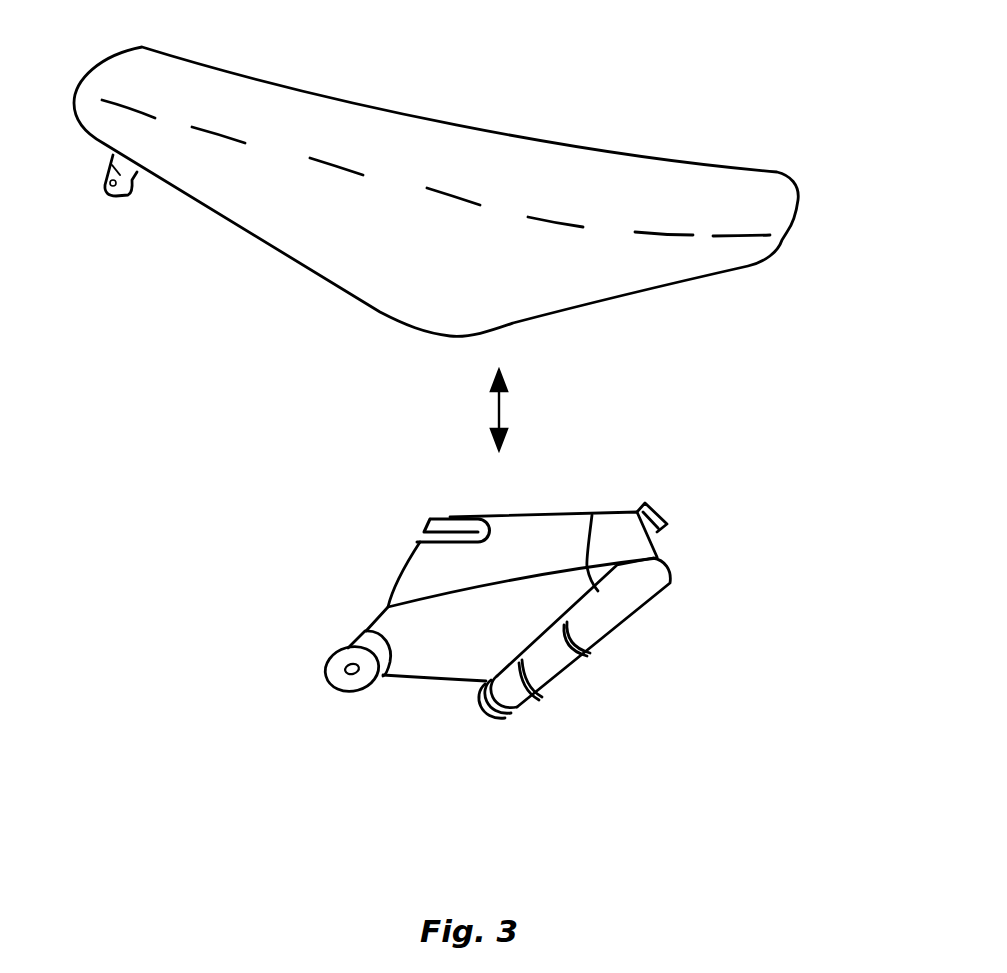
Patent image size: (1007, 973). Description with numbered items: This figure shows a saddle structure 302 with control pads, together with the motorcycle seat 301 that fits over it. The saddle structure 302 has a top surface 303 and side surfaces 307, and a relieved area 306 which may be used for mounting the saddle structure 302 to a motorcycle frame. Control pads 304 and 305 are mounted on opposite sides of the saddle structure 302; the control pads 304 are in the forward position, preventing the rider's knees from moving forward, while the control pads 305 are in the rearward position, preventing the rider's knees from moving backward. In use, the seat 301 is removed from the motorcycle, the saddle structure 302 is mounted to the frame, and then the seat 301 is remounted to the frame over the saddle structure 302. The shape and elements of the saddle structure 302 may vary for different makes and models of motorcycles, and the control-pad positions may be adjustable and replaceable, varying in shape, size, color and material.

The seat 301 is at (410, 143).
The saddle structure 302 is at (535, 550).
The top surface 303 is at (423, 567).
The control pads 304 is at (553, 683).
The control pads 305 is at (355, 641).
The relieved area 306 is at (453, 533).
The side surfaces 307 is at (467, 635).